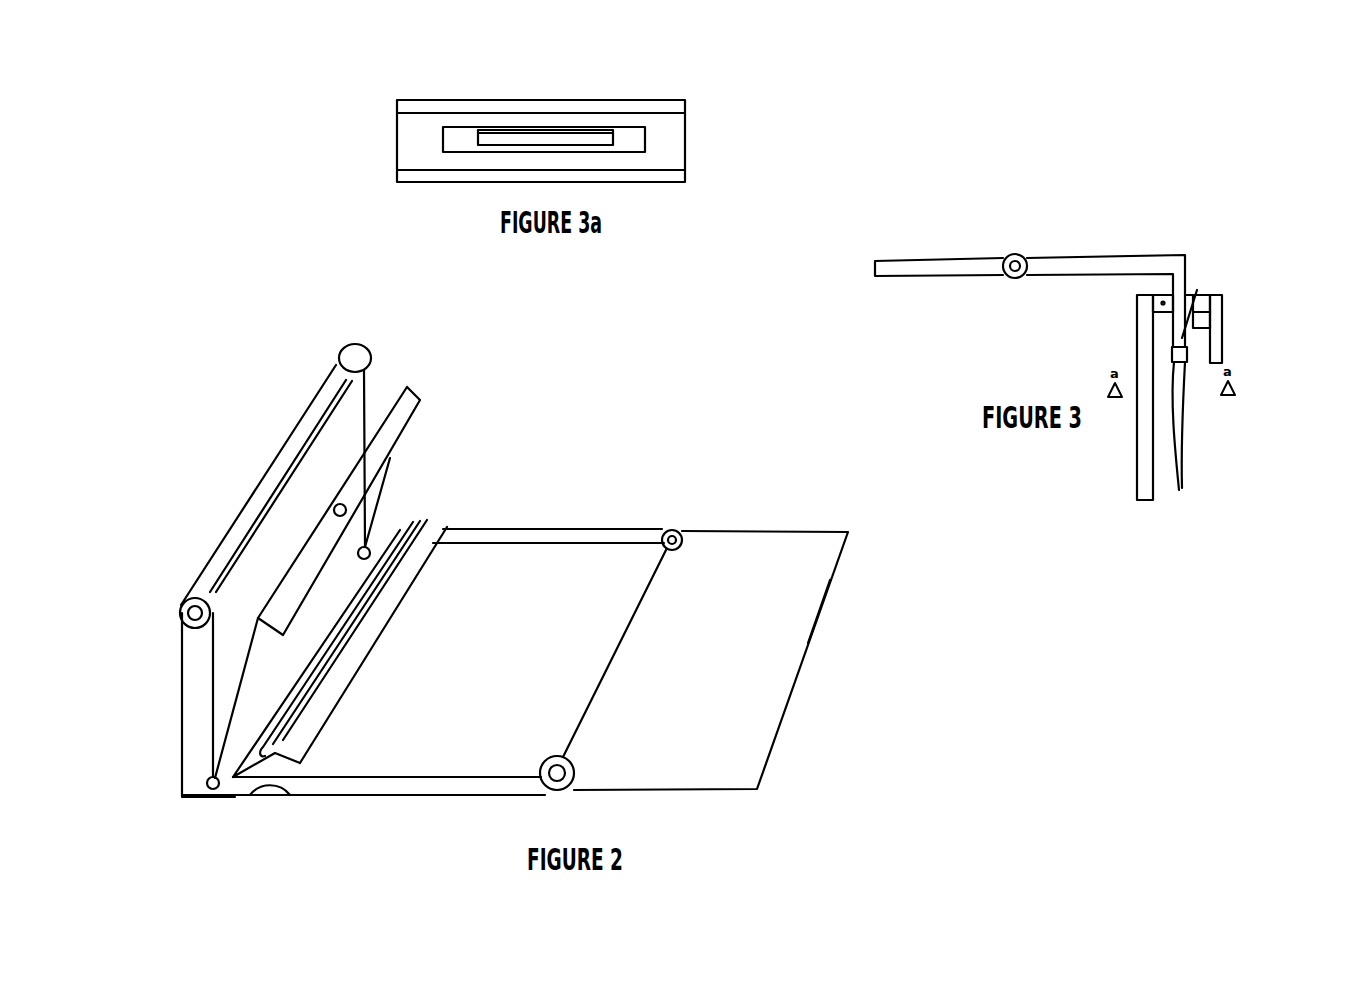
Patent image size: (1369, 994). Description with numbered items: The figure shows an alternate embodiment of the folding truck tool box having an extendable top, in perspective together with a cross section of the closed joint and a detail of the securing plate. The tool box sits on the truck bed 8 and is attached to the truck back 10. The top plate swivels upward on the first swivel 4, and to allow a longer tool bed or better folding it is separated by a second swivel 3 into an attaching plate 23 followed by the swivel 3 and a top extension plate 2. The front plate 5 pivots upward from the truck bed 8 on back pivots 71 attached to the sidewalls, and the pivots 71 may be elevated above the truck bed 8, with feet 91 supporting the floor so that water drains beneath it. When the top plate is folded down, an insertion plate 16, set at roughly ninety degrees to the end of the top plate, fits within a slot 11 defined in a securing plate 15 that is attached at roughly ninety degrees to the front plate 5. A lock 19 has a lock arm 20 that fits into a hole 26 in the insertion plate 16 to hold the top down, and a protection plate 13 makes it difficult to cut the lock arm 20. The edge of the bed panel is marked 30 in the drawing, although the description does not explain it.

In FIG. 3, the top extension plate 2 is at (1077, 258).
In FIG. 2, the second swivel 3 is at (218, 791).
In FIG. 3, the second swivel 3 is at (1020, 254).
In FIG. 2, the first swivel 4 is at (358, 344).
In FIG. 2, the front plate 5 is at (497, 684).
In FIG. 3, the front plate 5 is at (1143, 320).
In FIG. 3A, the front plate 5 is at (407, 104).
In FIG. 2, the truck bed 8 is at (735, 660).
In FIG. 2, the truck back 10 is at (190, 700).
In FIG. 2, the slot 11 is at (387, 547).
In FIG. 3, the slot 11 is at (1180, 490).
In FIG. 3A, the slot 11 is at (625, 135).
In FIG. 2, the protection plate 13 is at (394, 612).
In FIG. 3, the protection plate 13 is at (1220, 352).
In FIG. 2, the securing plate 15 is at (413, 522).
In FIG. 3, the securing plate 15 is at (1162, 296).
In FIG. 3A, the securing plate 15 is at (672, 134).
In FIG. 2, the insertion plate 16 is at (412, 392).
In FIG. 3, the insertion plate 16 is at (1178, 332).
In FIG. 3A, the insertion plate 16 is at (490, 135).
In FIG. 3, the lock 19 is at (1184, 362).
In FIG. 3, the lock arm 20 is at (1180, 336).
In FIG. 2, the attaching plate 23 is at (262, 575).
In FIG. 3, the attaching plate 23 is at (885, 264).
In FIG. 2, the hole 26 is at (393, 457).
In FIG. 3, the hole 26 is at (1197, 290).
In FIG. 2, the panel edge 30 is at (808, 644).
In FIG. 2, the back pivots 71 is at (678, 528).
In FIG. 2, the feet 91 is at (265, 797).